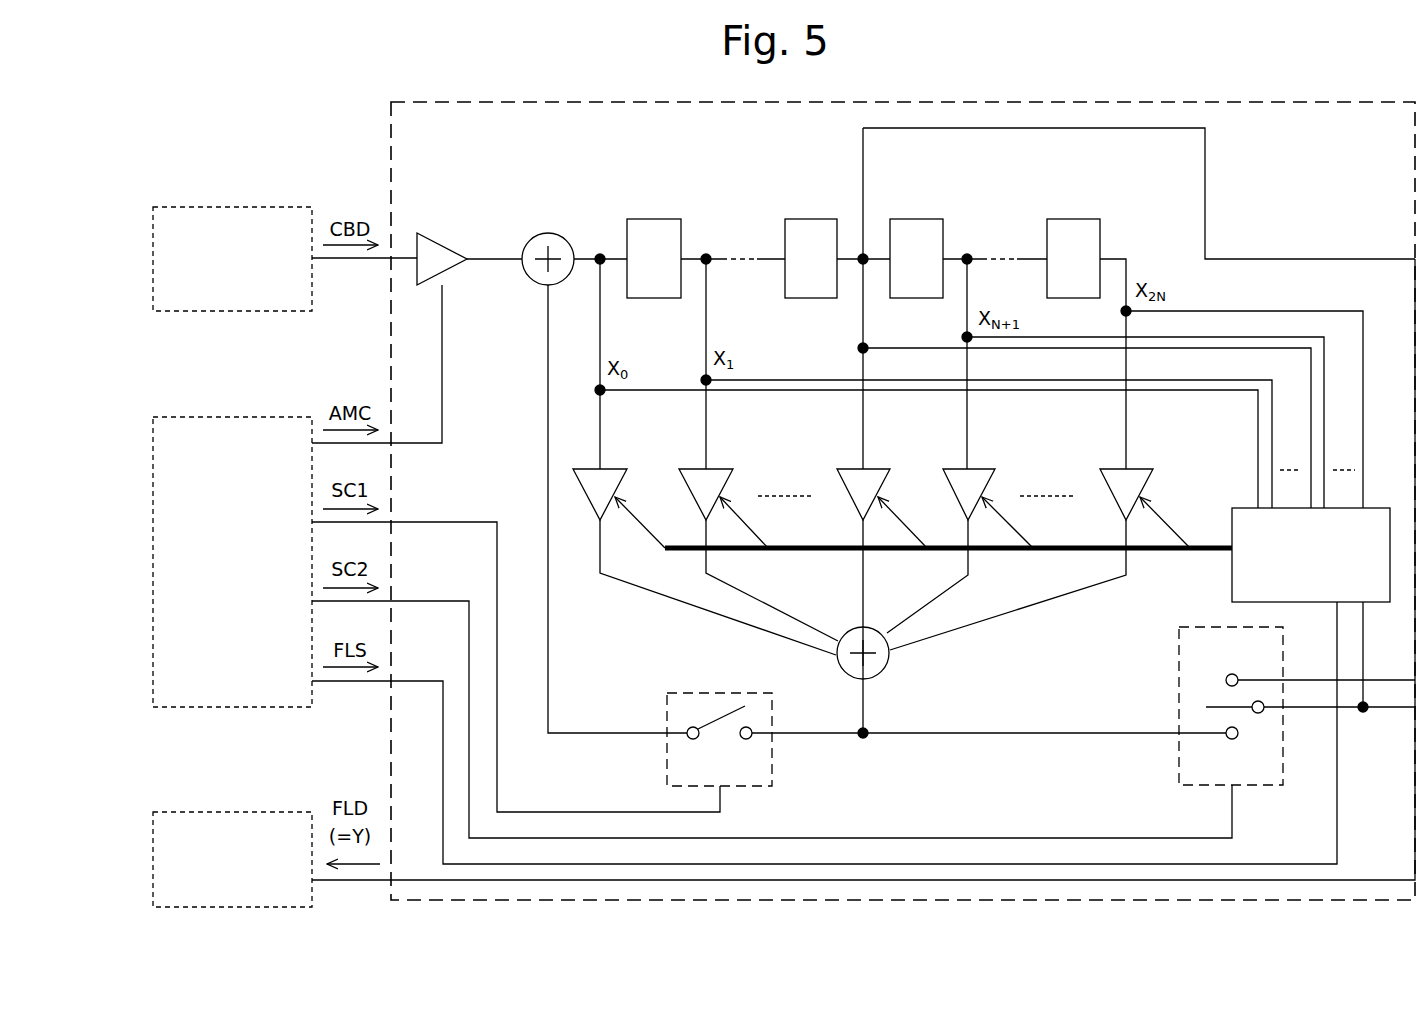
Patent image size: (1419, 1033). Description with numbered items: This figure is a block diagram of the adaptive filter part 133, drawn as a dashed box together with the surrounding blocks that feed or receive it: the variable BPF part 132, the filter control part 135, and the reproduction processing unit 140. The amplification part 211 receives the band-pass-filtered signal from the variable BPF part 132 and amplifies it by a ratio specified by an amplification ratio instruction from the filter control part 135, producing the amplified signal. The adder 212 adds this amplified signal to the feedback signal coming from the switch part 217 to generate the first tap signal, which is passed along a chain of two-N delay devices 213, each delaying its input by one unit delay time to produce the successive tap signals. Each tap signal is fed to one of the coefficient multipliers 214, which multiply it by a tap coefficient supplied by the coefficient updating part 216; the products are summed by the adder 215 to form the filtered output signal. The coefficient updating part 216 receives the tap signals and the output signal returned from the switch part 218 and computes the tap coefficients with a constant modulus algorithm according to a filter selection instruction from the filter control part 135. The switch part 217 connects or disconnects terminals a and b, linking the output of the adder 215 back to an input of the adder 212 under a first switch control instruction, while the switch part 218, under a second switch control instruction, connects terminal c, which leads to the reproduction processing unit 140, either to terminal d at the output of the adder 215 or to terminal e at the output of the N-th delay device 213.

The variable BPF part 132 is at (232, 207).
The adaptive filter part 133 is at (391, 200).
The filter control part 135 is at (212, 417).
The reproduction processing unit 140 is at (235, 812).
The amplification part 211 is at (445, 245).
The adder 212 is at (548, 233).
The delay device 213 is at (1097, 195).
The coefficient multiplier 214 is at (1165, 442).
The adder 215 is at (885, 670).
The coefficient updating part 216 is at (1232, 572).
The switch part 217 is at (667, 703).
The switch part 218 is at (1179, 708).